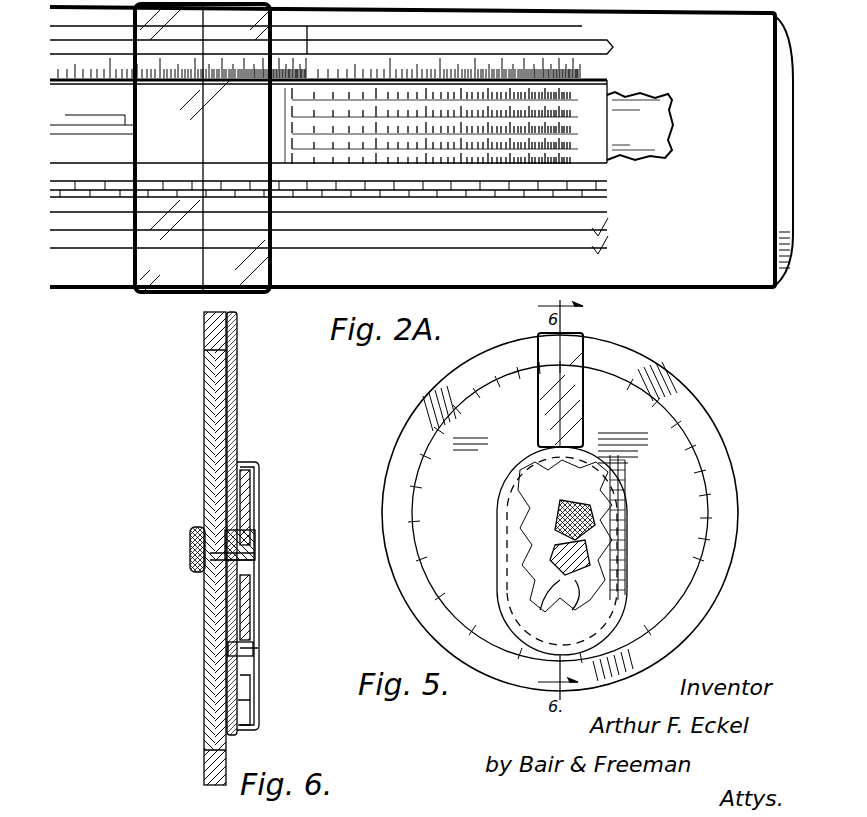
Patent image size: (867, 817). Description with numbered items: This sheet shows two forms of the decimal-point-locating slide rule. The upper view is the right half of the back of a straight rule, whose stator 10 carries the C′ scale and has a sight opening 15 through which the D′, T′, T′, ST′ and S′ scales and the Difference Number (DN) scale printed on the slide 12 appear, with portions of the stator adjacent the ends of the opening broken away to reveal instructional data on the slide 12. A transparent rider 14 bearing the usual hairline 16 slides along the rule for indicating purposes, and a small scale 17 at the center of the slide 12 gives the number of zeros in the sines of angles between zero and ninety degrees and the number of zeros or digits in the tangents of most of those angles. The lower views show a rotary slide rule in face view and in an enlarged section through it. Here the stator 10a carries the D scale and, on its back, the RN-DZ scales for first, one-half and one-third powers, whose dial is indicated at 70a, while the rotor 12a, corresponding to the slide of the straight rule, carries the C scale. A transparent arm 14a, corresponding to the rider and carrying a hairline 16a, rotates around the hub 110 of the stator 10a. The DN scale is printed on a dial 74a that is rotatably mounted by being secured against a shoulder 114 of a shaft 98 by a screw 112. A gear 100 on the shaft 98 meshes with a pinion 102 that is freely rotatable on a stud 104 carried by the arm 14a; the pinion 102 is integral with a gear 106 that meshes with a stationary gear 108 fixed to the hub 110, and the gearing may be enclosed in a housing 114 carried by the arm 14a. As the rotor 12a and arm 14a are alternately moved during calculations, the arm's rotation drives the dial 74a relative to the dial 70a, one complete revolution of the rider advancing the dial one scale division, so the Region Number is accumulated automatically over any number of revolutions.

In FIG. 2A, the stator 10 is at (695, 258).
In FIG. 2A, the slide 12 is at (790, 278).
In FIG. 2A, the rider 14 is at (270, 267).
In FIG. 2A, the sight opening 15 is at (605, 178).
In FIG. 2A, the hairline 16 is at (200, 258).
In FIG. 2A, the small scale 17 is at (65, 118).
In FIG. 6, the stator 10a is at (237, 395).
In FIG. 5, the stator 10a is at (710, 583).
In FIG. 6, the rotor 12a is at (205, 765).
In FIG. 5, the rotor 12a is at (703, 431).
In FIG. 6, the transparent arm 14a is at (290, 618).
In FIG. 5, the transparent arm 14a is at (605, 362).
In FIG. 5, the hairline 16a is at (575, 398).
In FIG. 6, the dial 70a is at (197, 415).
In FIG. 6, the dial 74a is at (197, 486).
In FIG. 6, the shaft 98 is at (250, 540).
In FIG. 5, the shaft 98 is at (560, 525).
In FIG. 6, the gear 100 is at (259, 592).
In FIG. 5, the gear 100 is at (625, 505).
In FIG. 6, the pinion 102 is at (250, 685).
In FIG. 5, the pinion 102 is at (545, 604).
In FIG. 6, the stud 104 is at (247, 648).
In FIG. 5, the stud 104 is at (590, 604).
In FIG. 6, the gear 106 is at (250, 708).
In FIG. 5, the gear 106 is at (570, 560).
In FIG. 6, the stationary gear 108 is at (280, 572).
In FIG. 5, the stationary gear 108 is at (628, 530).
In FIG. 6, the hub 110 is at (255, 518).
In FIG. 6, the screw 112 is at (195, 545).
In FIG. 6, the shoulder 114 is at (310, 665).
In FIG. 5, the shoulder 114 is at (575, 482).